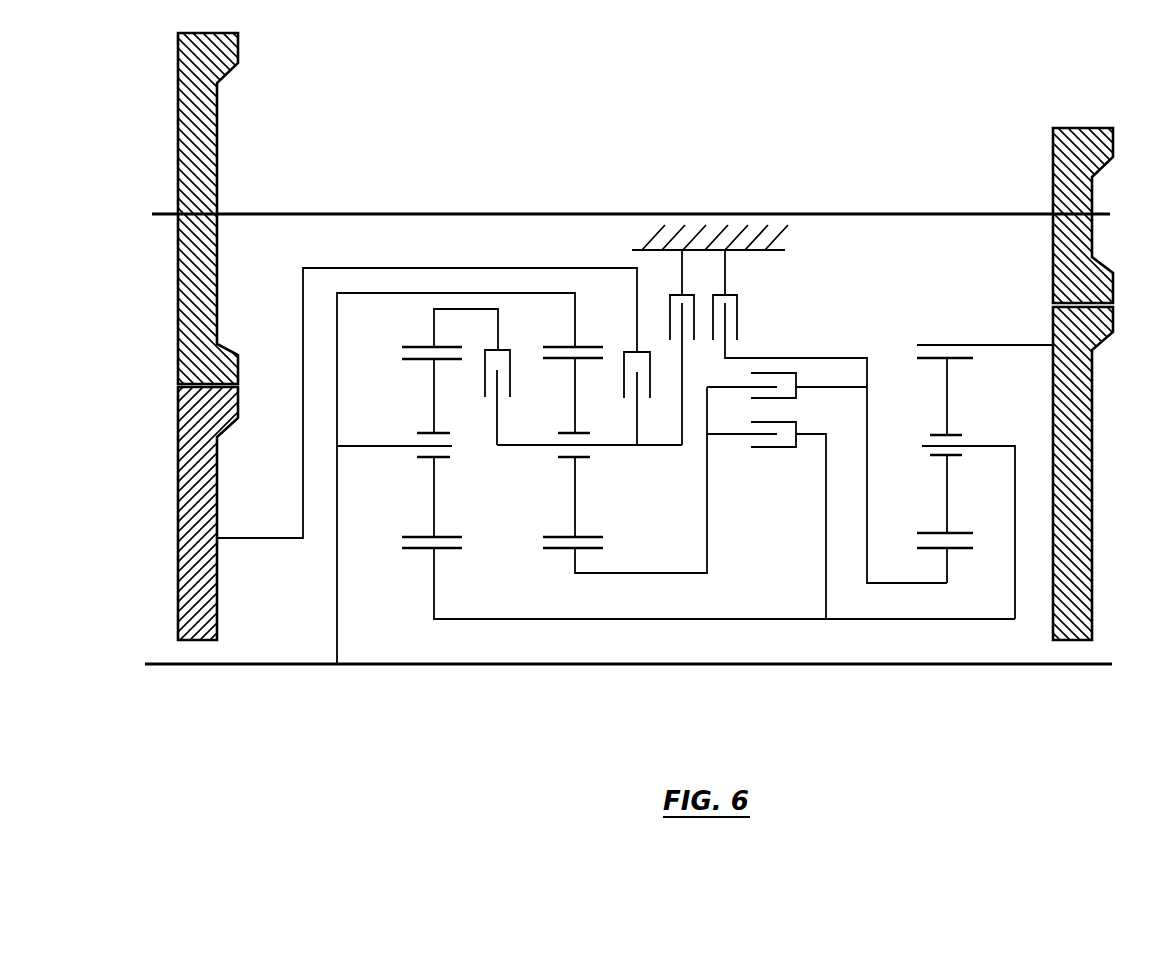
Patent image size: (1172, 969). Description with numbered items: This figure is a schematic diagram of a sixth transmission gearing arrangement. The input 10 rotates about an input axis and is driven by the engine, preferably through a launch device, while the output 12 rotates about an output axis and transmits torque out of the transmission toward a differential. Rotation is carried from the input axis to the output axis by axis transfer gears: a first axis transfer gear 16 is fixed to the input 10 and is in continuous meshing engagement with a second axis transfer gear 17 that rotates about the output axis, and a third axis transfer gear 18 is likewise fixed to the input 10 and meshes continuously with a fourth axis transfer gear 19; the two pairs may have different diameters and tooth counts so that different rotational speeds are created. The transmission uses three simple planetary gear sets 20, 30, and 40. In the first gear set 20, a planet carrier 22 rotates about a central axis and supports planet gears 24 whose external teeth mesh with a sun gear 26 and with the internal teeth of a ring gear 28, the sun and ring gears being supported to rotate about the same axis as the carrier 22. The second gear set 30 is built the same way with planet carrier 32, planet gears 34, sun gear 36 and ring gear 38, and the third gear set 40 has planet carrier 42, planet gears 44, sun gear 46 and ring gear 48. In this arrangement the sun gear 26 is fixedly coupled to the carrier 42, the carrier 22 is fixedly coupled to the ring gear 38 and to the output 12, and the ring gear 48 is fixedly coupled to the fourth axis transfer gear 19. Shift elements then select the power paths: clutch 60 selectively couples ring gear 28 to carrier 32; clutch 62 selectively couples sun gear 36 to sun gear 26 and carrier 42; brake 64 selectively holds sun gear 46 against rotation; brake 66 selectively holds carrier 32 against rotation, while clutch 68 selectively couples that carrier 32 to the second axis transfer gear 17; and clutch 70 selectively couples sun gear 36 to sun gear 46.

The input 10 is at (448, 212).
The output 12 is at (723, 665).
The first axis transfer gear 16 is at (217, 134).
The second axis transfer gear 17 is at (217, 622).
The third axis transfer gear 18 is at (1092, 241).
The fourth axis transfer gear 19 is at (1092, 446).
The planetary gear set 20 is at (676, 517).
The planet carrier 22 is at (415, 448).
The planet gears 24 is at (434, 400).
The sun gear 26 is at (434, 573).
The ring gear 28 is at (436, 312).
The planetary gear set 30 is at (602, 501).
The planet carrier 32 is at (603, 447).
The planet gears 34 is at (575, 403).
The sun gear 36 is at (580, 583).
The ring gear 38 is at (575, 314).
The planetary gear set 40 is at (968, 513).
The planet carrier 42 is at (992, 446).
The planet gears 44 is at (947, 398).
The sun gear 46 is at (947, 583).
The ring gear 48 is at (980, 345).
The clutch 60 is at (508, 387).
The clutch 62 is at (766, 520).
The brake 64 is at (830, 416).
The brake 66 is at (690, 347).
The clutch 68 is at (630, 387).
The clutch 70 is at (787, 394).